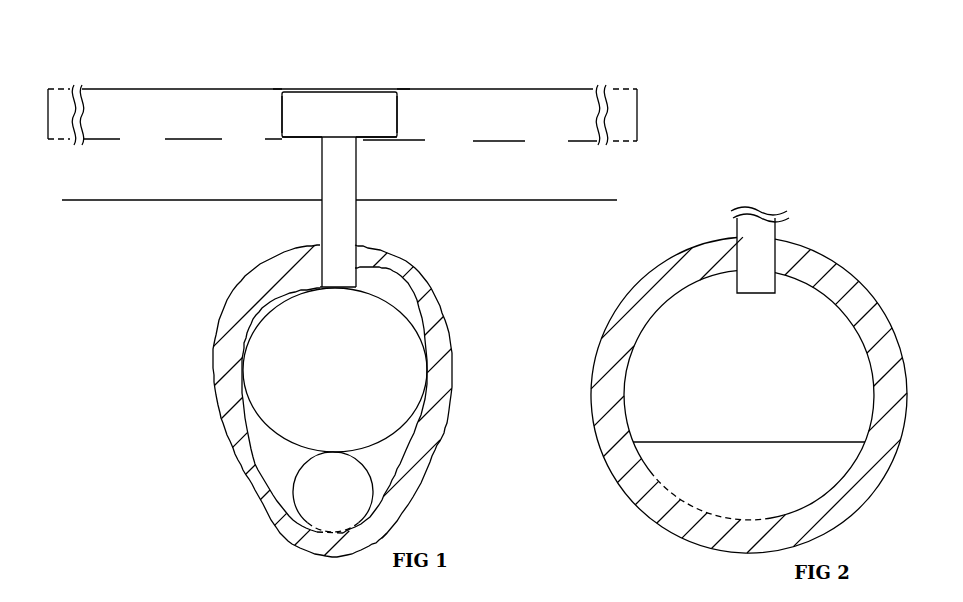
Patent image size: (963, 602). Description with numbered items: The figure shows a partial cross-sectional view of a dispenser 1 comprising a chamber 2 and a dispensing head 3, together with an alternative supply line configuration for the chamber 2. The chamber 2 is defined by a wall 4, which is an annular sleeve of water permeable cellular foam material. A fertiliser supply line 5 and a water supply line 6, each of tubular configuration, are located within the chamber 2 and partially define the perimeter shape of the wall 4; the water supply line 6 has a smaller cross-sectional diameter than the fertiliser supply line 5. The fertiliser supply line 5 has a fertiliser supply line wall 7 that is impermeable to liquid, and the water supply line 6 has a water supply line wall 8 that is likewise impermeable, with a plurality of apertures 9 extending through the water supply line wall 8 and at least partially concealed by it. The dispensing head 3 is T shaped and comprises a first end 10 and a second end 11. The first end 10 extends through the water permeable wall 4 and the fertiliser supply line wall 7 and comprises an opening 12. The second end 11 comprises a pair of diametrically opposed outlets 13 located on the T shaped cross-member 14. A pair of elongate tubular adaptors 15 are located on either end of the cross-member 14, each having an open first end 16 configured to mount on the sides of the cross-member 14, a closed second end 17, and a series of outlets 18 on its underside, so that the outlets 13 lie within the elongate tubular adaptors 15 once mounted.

In FIG. 1, the dispenser 1 is at (663, 103).
In FIG. 1, the chamber 2 is at (273, 457).
In FIG. 2, the chamber 2 is at (840, 300).
In FIG. 1, the dispensing head 3 is at (360, 167).
In FIG. 1, the wall 4 is at (445, 346).
In FIG. 2, the wall 4 is at (608, 376).
In FIG. 1, the fertiliser supply line 5 is at (275, 355).
In FIG. 2, the fertiliser supply line 5 is at (862, 360).
In FIG. 1, the water supply line 6 is at (305, 499).
In FIG. 2, the water supply line 6 is at (842, 460).
In FIG. 1, the fertiliser supply line wall 7 is at (410, 310).
In FIG. 2, the fertiliser supply line wall 7 is at (822, 273).
In FIG. 1, the water supply line wall 8 is at (370, 473).
In FIG. 2, the water supply line wall 8 is at (612, 466).
In FIG. 1, the apertures 9 is at (317, 532).
In FIG. 2, the apertures 9 is at (740, 522).
In FIG. 1, the first end 10 is at (328, 258).
In FIG. 1, the second end 11 is at (342, 95).
In FIG. 1, the opening 12 is at (318, 287).
In FIG. 1, the outlets 13 is at (273, 97).
In FIG. 1, the T shaped cross-member 14 is at (300, 118).
In FIG. 1, the elongate tubular adaptors 15 is at (170, 78).
In FIG. 1, the open first end 16 is at (390, 90).
In FIG. 1, the closed second end 17 is at (40, 82).
In FIG. 1, the outlets 18 is at (141, 143).